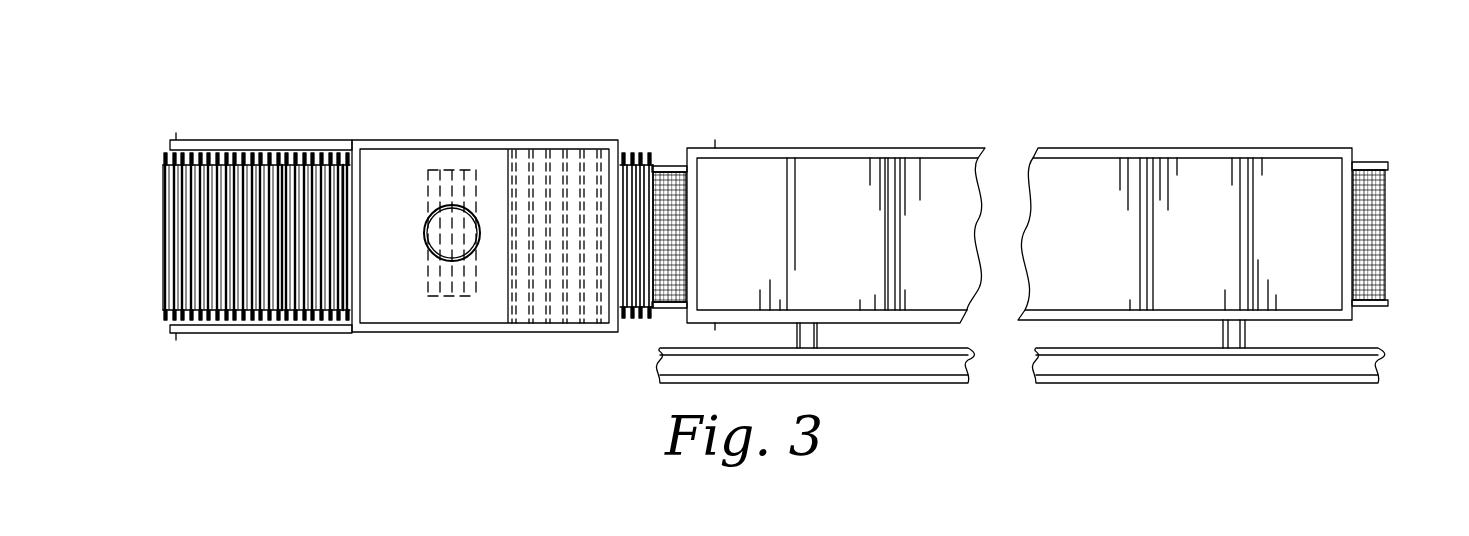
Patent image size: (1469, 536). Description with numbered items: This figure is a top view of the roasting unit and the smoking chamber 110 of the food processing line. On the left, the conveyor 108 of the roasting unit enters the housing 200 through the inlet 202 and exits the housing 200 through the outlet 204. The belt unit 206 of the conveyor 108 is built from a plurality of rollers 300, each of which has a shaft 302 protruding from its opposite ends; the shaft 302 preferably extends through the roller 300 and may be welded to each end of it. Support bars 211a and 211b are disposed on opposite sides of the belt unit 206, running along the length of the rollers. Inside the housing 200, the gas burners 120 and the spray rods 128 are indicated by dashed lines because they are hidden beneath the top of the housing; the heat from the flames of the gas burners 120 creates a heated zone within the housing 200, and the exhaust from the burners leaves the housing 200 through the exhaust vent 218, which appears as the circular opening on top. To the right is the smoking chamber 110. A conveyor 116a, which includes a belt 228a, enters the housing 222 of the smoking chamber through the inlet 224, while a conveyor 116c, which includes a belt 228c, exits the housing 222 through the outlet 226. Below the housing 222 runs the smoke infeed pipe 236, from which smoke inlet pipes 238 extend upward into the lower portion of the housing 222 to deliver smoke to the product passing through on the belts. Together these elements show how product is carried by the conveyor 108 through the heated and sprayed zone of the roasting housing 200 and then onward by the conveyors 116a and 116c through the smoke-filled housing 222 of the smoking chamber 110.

The conveyor 108 is at (163, 190).
The smoking chamber 110 is at (1190, 117).
The conveyor 116a is at (662, 165).
The conveyor 116c is at (1366, 306).
The gas burners 120 is at (450, 160).
The spray rods 128 is at (547, 158).
The housing 200 is at (383, 332).
The inlet 202 is at (338, 185).
The outlet 204 is at (636, 163).
The belt unit 206 is at (163, 250).
The support bar 211a is at (230, 335).
The support bar 211b is at (250, 140).
The exhaust vent 218 is at (424, 238).
The housing 222 is at (840, 165).
The inlet 224 is at (678, 168).
The outlet 226 is at (1362, 190).
The belt 228a is at (668, 306).
The belt 228c is at (1385, 190).
The smoke infeed pipe 236 is at (925, 384).
The smoke inlet pipes 238 is at (818, 335).
The rollers 300 is at (282, 248).
The shaft 302 is at (306, 158).